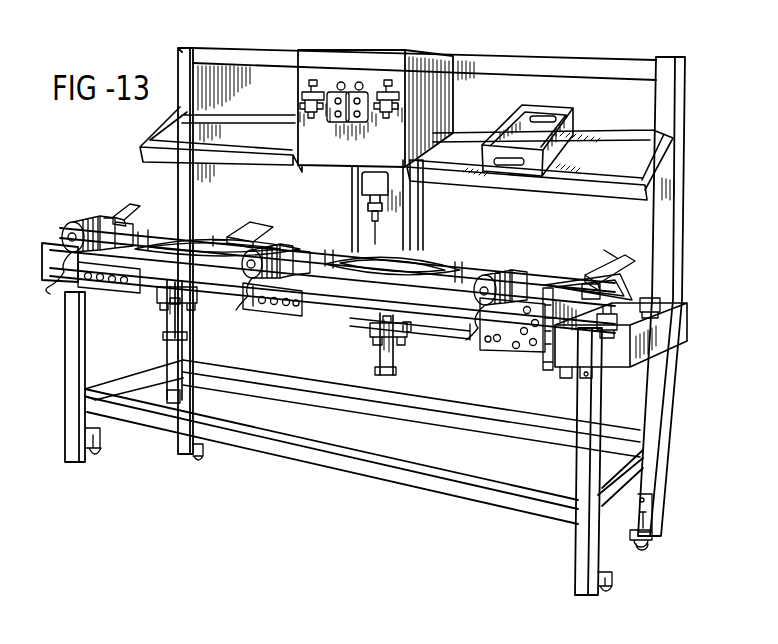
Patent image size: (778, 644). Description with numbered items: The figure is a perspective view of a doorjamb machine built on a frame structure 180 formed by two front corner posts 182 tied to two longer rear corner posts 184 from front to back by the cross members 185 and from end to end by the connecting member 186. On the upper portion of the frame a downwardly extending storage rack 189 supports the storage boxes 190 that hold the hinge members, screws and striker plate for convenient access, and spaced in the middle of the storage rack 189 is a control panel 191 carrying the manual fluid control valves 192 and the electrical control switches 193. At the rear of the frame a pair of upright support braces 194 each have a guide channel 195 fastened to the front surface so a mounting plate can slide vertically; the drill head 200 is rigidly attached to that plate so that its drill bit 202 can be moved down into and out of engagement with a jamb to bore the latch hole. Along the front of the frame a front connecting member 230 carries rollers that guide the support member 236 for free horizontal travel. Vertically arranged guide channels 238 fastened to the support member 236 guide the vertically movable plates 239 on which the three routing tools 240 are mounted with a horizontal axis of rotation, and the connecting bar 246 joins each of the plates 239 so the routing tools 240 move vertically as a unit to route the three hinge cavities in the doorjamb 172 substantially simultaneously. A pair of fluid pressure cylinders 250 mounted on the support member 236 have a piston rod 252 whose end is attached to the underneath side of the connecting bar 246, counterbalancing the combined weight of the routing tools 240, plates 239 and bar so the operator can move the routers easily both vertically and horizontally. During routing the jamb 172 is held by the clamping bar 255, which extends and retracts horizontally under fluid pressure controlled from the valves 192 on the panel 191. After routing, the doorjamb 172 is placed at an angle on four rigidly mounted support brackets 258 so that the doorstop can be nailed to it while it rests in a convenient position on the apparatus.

The doorjamb 172 is at (440, 277).
The frame structure 180 is at (257, 453).
The front corner posts 182 is at (73, 430).
The rear corner posts 184 is at (178, 183).
The cross members 185 is at (137, 383).
The connecting member 186 is at (393, 463).
The storage rack 189 is at (656, 157).
The storage boxes 190 is at (547, 106).
The control panel 191 is at (407, 55).
The manual fluid control valves 192 is at (312, 78).
The electrical control switches 193 is at (358, 84).
The upright support braces 194 is at (430, 201).
The guide channel 195 is at (410, 224).
The drill head 200 is at (369, 194).
The drill bit 202 is at (368, 214).
The front connecting member 230 is at (418, 337).
The support member 236 is at (620, 346).
The guide channels 238 is at (540, 363).
The vertically movable plates 239 is at (106, 278).
The routing tools 240 is at (76, 224).
The connecting bar 246 is at (336, 318).
The fluid pressure cylinders 250 is at (180, 321).
The piston rod 252 is at (157, 291).
The clamping bar 255 is at (626, 314).
The support brackets 258 is at (118, 209).